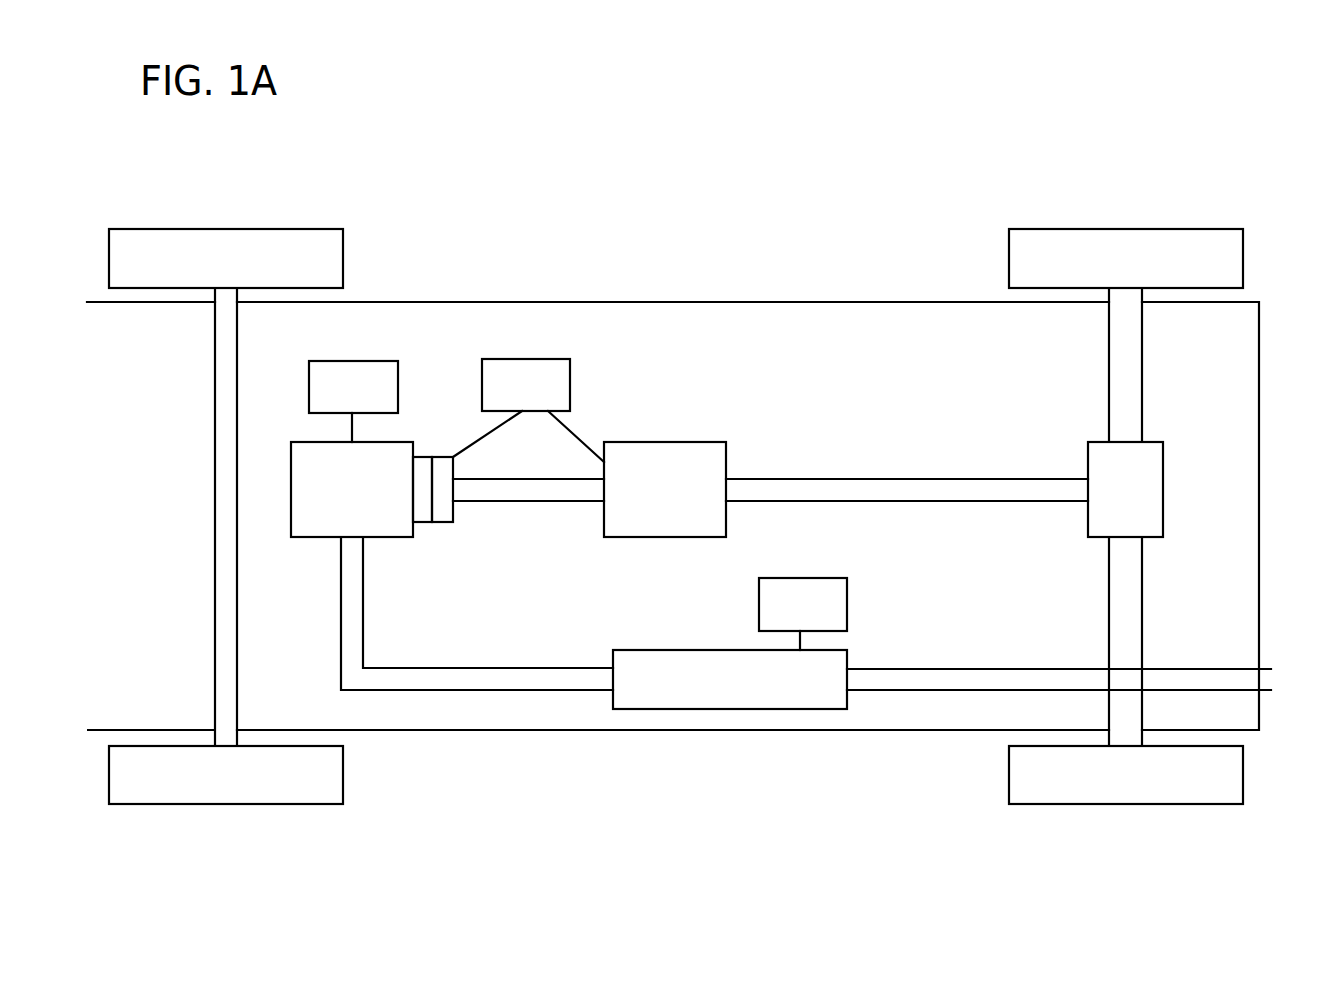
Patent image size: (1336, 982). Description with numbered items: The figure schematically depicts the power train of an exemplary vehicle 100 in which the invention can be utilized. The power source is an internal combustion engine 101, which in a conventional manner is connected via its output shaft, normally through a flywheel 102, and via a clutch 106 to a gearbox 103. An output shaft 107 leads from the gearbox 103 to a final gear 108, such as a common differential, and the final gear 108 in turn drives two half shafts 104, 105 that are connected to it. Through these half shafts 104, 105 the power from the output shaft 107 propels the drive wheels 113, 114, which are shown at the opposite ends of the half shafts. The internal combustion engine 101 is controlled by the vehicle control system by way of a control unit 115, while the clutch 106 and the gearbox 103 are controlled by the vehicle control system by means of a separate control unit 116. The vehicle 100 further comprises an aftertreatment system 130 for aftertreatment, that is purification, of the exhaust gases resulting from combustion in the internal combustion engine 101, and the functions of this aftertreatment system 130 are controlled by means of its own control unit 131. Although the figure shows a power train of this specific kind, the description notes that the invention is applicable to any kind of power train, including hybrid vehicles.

The vehicle 100 is at (578, 136).
The internal combustion engine 101 is at (322, 527).
The flywheel 102 is at (428, 524).
The gearbox 103 is at (668, 452).
The half shaft 104 is at (1130, 361).
The half shaft 105 is at (1136, 651).
The clutch 106 is at (445, 513).
The output shaft 107 is at (1003, 494).
The final gear 108 is at (1157, 487).
The drive wheel 113 is at (1238, 250).
The drive wheel 114 is at (1238, 779).
The control unit 115 is at (353, 397).
The control unit 116 is at (547, 397).
The aftertreatment system 130 is at (716, 661).
The control unit 131 is at (803, 613).